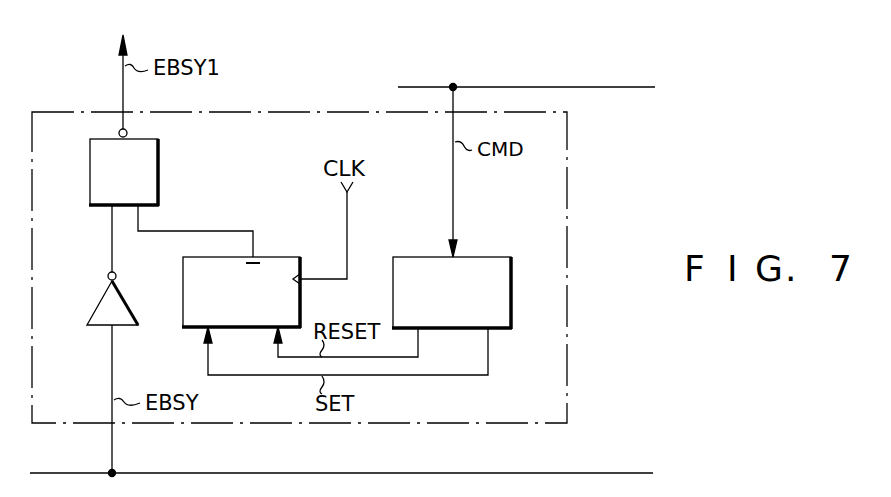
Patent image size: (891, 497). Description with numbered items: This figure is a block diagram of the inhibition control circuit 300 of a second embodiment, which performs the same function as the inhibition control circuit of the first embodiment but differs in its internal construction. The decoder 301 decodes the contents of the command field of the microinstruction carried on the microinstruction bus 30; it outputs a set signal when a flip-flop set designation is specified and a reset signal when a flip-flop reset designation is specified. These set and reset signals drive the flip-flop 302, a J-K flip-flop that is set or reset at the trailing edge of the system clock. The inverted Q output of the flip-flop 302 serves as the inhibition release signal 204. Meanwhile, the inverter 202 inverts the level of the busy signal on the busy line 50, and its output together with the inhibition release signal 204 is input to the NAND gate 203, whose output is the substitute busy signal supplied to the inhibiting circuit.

The microinstruction bus 30 is at (606, 86).
The EBSY line 50 is at (620, 473).
The inverter 202 is at (99, 309).
The NAND gate 203 is at (150, 183).
The inhibition release signal 204 is at (232, 231).
The inhibition control circuit 300 is at (567, 380).
The decoder 301 is at (481, 272).
The flip-flop 302 is at (190, 282).